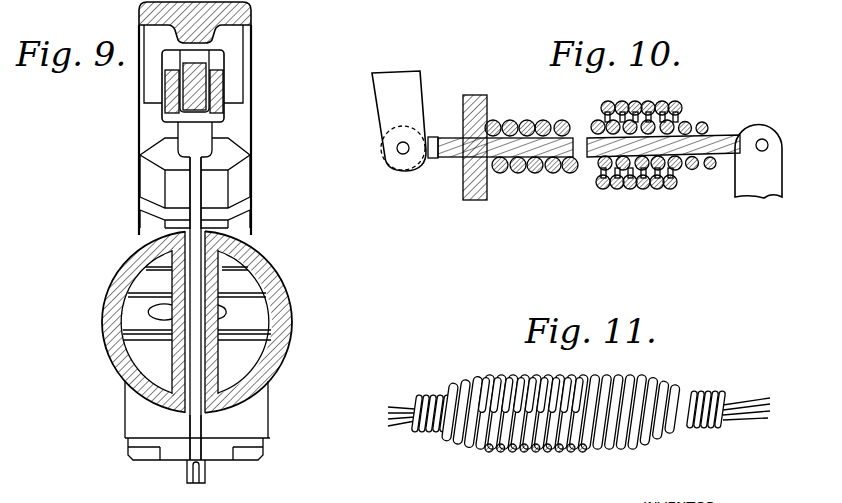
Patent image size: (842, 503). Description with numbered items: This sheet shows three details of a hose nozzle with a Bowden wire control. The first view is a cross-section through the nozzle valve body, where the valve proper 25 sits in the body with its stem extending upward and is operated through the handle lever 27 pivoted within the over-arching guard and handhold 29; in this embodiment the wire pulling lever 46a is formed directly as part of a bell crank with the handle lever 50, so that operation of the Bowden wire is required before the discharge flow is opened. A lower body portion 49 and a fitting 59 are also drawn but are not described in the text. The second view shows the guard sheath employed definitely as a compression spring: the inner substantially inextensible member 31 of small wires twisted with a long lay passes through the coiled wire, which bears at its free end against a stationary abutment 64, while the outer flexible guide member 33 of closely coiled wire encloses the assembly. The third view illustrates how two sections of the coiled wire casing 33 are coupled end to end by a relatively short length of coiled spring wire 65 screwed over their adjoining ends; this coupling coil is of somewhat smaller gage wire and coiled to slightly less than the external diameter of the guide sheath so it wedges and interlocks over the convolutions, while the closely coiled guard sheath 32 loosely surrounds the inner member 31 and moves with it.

In FIG. 9, the over-arching guard and handhold 29 is at (248, 13).
In FIG. 9, the handle lever 50 is at (224, 110).
In FIG. 9, the handle lever 27 is at (163, 112).
In FIG. 9, the valve proper 25 is at (233, 312).
In FIG. 9, the base housing 49 is at (178, 411).
In FIG. 9, the wire pulling lever 46a is at (200, 432).
In FIG. 10, the inner substantially inextensible member 31 is at (537, 148).
In FIG. 11, the inner substantially inextensible member 31 is at (407, 423).
In FIG. 10, the stationary abutment 64 is at (463, 190).
In FIG. 10, the outer flexible guide member 33 is at (642, 190).
In FIG. 11, the outer flexible guide member 33 is at (477, 442).
In FIG. 10, the clevis 59 is at (707, 130).
In FIG. 11, the guard sheath 32 is at (435, 397).
In FIG. 11, the coiled spring wire 65 is at (533, 377).